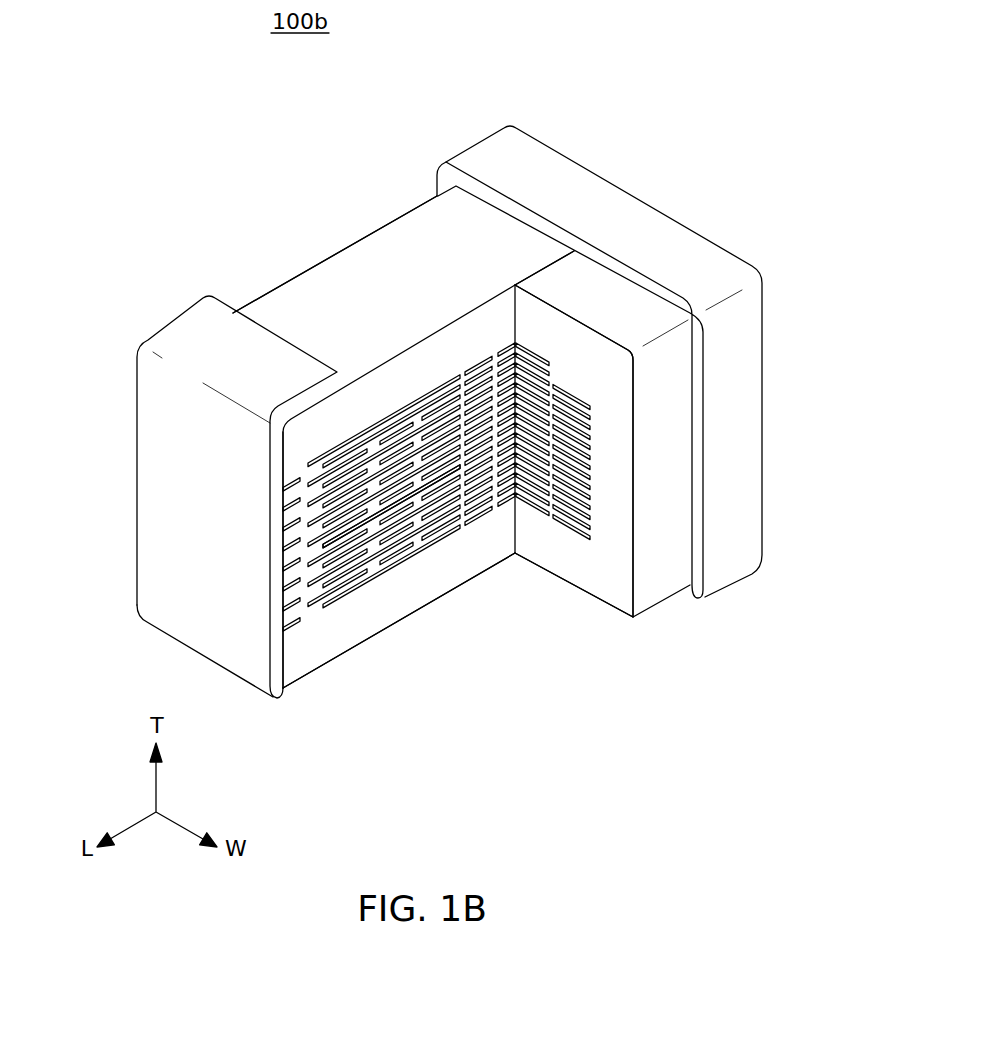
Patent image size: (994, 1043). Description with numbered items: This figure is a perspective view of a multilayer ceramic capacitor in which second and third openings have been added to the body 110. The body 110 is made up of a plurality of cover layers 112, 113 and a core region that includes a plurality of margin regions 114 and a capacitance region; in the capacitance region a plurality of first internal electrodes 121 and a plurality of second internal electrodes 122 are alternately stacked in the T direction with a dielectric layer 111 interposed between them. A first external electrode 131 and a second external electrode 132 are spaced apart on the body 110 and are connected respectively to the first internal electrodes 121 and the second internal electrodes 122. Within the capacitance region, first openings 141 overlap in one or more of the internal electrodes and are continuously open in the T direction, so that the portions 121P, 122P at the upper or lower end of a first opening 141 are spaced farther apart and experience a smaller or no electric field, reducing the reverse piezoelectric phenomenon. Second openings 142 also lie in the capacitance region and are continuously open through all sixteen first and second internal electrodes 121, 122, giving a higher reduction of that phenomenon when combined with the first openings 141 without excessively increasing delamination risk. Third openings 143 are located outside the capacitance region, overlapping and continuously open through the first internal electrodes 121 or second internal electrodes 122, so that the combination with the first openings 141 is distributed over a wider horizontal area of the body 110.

The body 110 is at (485, 214).
The dielectric layer 111 is at (305, 562).
The cover layer 112 is at (420, 371).
The cover layer 113 is at (388, 600).
The margin region 114 is at (615, 548).
The first internal electrode 121 is at (283, 470).
The portion of first internal electrode 121P is at (377, 528).
The second internal electrode 122 is at (349, 595).
The portion of second internal electrode 122P is at (432, 540).
The first external electrode 131 is at (195, 343).
The second external electrode 132 is at (547, 167).
The first opening 141 is at (463, 457).
The second opening 142 is at (497, 372).
The third opening 143 is at (296, 468).